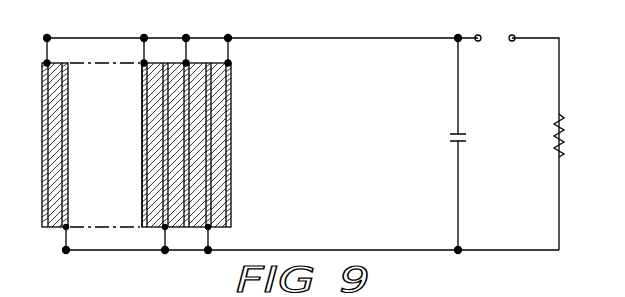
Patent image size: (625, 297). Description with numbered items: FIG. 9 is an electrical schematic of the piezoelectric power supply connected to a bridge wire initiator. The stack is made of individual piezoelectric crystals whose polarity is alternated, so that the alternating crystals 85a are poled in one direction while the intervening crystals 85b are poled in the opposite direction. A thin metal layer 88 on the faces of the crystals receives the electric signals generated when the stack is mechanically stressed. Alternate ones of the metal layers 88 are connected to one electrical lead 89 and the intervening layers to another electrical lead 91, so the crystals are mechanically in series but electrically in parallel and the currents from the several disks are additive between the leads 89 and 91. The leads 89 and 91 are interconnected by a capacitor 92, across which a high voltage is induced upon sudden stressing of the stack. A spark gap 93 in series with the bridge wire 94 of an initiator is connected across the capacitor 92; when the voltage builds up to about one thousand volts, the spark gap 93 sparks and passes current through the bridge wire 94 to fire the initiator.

The alternating piezoelectric crystals 85a is at (212, 63).
The intervening piezoelectric crystals 85b is at (203, 108).
The thin metal layer 88 is at (198, 149).
The electrical lead 89 is at (273, 38).
The electrical lead 91 is at (130, 250).
The capacitor 92 is at (462, 134).
The spark gap 93 is at (515, 36).
The bridge wire 94 is at (556, 118).